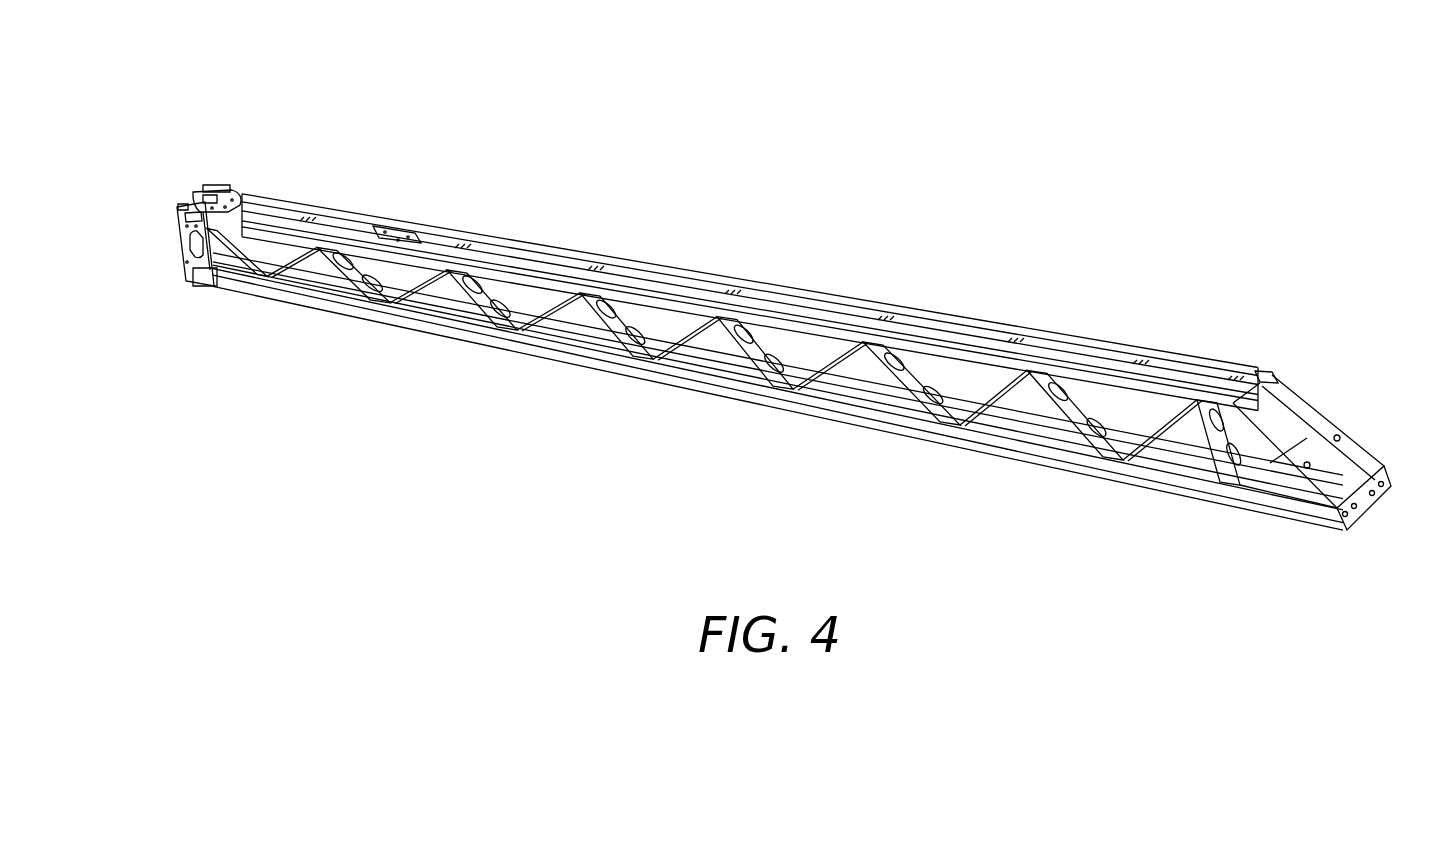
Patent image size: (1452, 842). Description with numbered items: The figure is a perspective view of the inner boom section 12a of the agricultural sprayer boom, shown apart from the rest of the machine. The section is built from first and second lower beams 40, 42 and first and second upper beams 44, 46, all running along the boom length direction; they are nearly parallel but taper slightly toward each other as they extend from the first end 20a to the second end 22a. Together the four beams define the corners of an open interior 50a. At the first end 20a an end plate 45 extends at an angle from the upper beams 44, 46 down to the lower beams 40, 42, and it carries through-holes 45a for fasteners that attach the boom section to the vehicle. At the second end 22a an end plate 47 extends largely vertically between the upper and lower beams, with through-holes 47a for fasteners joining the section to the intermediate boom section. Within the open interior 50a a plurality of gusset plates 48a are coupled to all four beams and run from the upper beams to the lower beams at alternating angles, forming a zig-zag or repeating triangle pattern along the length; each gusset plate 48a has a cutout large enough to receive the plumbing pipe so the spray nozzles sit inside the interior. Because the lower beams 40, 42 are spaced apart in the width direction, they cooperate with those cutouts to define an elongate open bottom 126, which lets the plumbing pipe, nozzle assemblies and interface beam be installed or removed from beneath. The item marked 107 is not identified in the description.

The inner boom section 12a is at (858, 178).
The first end 20a is at (1354, 300).
The second end 22a is at (209, 156).
The first lower beam 40 is at (1034, 424).
The second lower beam 42 is at (1072, 448).
The first upper beam 44 is at (1138, 352).
The end plate 45 is at (1327, 425).
The through-holes 45a is at (1282, 385).
The second upper beam 46 is at (1020, 348).
The end plate 47 is at (183, 258).
The through-holes 47a is at (200, 194).
The gusset plates 48a is at (566, 312).
The open interior 50a is at (708, 366).
The slot 107 is at (886, 322).
The open bottom 126 is at (382, 344).